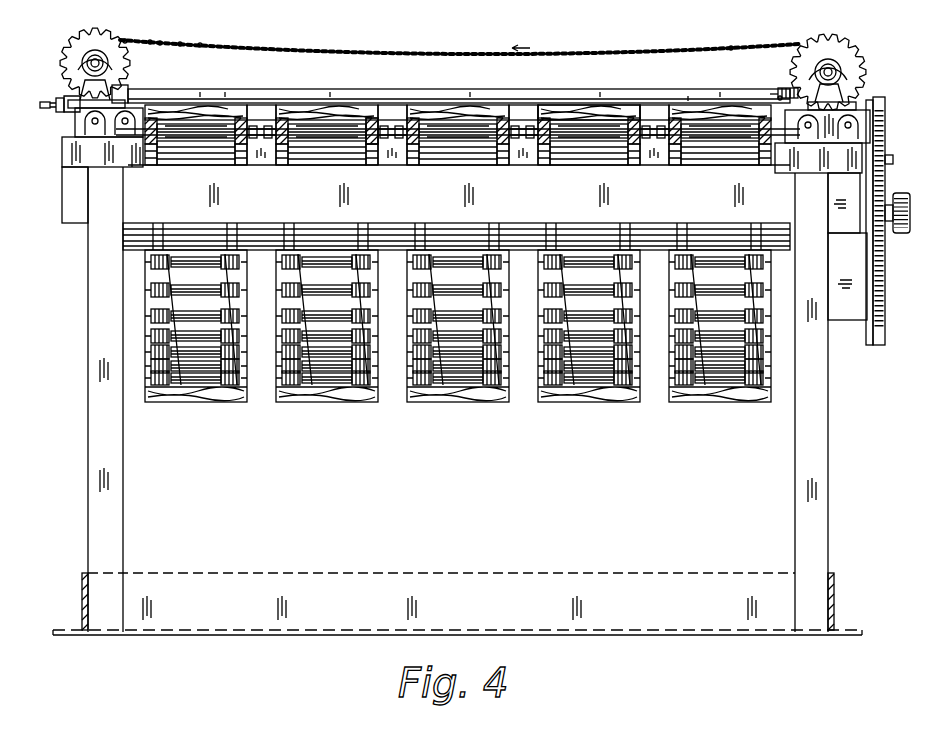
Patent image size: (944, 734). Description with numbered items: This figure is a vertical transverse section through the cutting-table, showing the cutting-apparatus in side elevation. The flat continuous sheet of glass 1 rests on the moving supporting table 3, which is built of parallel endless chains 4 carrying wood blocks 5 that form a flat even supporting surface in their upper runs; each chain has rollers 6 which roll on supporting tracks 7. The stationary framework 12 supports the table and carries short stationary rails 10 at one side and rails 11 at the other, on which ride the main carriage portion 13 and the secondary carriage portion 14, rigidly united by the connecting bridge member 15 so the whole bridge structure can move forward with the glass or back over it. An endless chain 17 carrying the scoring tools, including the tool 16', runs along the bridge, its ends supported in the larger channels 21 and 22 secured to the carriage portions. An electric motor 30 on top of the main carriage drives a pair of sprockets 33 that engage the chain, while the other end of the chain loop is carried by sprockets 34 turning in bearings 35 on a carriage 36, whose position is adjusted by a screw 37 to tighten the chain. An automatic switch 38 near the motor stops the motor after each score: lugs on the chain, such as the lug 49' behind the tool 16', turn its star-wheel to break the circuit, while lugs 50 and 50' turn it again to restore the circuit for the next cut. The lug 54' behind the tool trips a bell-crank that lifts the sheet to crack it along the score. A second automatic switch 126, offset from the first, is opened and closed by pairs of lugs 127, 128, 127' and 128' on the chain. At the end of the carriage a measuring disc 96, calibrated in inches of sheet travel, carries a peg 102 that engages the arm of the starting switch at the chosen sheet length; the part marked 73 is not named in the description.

The sheet of glass 1 is at (436, 101).
The supporting table 3 is at (360, 106).
The endless chains 4 is at (566, 123).
The wood blocks 5 is at (618, 114).
The rollers 6 is at (516, 104).
The supporting tracks 7 is at (408, 168).
The stationary rails 10 is at (855, 118).
The stationary rails 11 is at (74, 121).
The stationary framework 12 is at (108, 456).
The main carriage portion 13 is at (843, 313).
The secondary carriage portion 14 is at (62, 110).
The connecting bridge member 15 is at (292, 101).
The scoring tool 16' is at (143, 24).
The endless chain 17 is at (432, 54).
The channel 21 is at (812, 106).
The channel 22 is at (121, 96).
The electric motor 30 is at (840, 50).
The driving sprockets 33 is at (846, 63).
The sprockets 34 is at (100, 34).
The bearings 35 is at (66, 84).
The carriage 36 is at (72, 98).
The screw 37 is at (40, 105).
The automatic switch 38 is at (787, 89).
The lug 49' is at (155, 55).
The lug 50 is at (763, 89).
The lug 50' is at (188, 56).
The lug 54' is at (172, 29).
The hand wheel 73 is at (902, 222).
The measuring disc 96 is at (886, 133).
The peg 102 is at (894, 160).
The automatic switch 126 is at (778, 94).
The lug 127 is at (219, 32).
The lug 127' is at (707, 85).
The lug 128 is at (732, 37).
The lug 128' is at (211, 81).